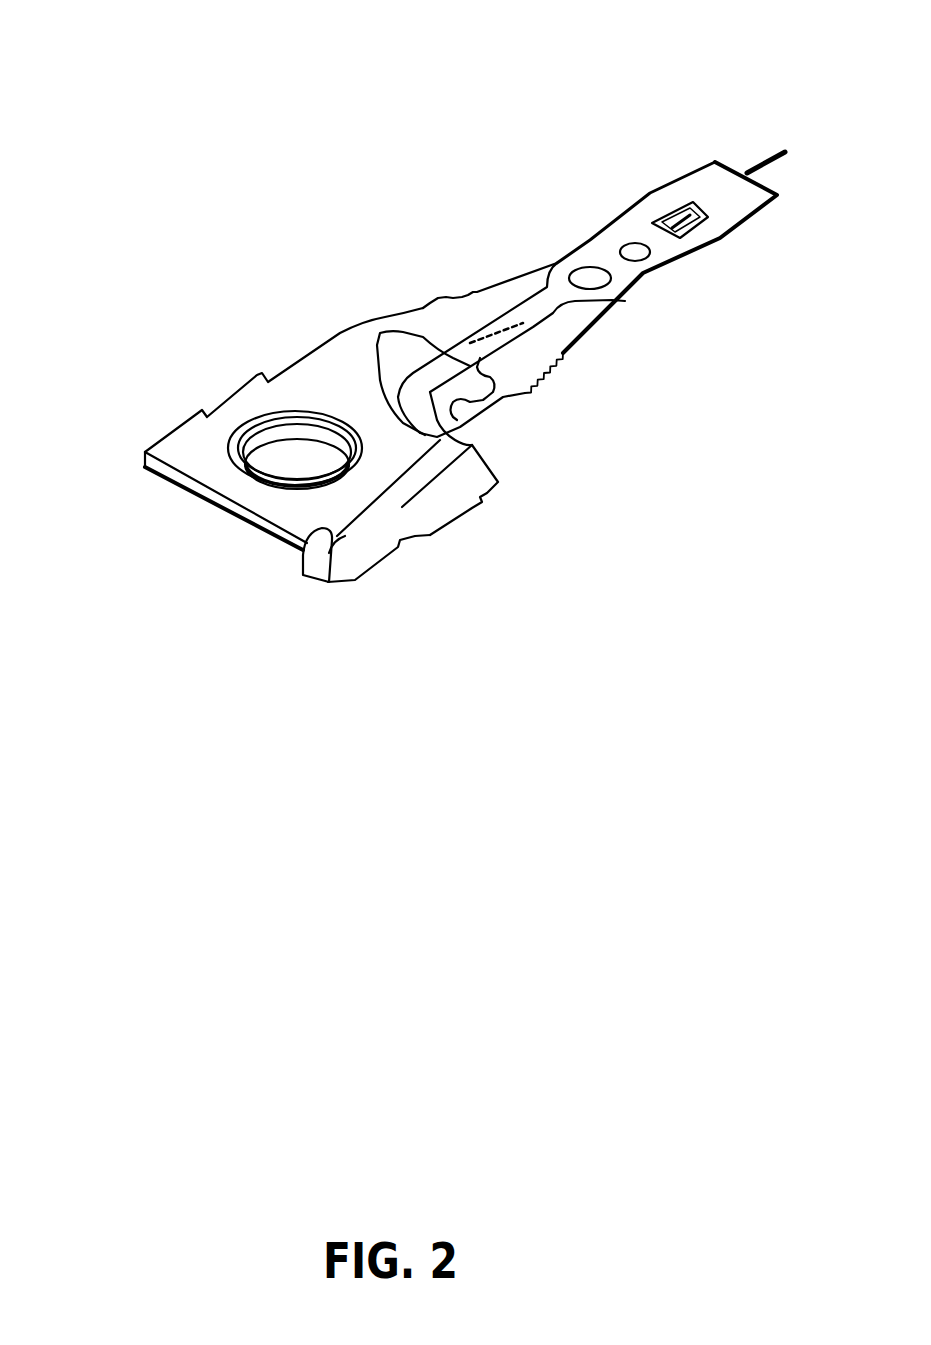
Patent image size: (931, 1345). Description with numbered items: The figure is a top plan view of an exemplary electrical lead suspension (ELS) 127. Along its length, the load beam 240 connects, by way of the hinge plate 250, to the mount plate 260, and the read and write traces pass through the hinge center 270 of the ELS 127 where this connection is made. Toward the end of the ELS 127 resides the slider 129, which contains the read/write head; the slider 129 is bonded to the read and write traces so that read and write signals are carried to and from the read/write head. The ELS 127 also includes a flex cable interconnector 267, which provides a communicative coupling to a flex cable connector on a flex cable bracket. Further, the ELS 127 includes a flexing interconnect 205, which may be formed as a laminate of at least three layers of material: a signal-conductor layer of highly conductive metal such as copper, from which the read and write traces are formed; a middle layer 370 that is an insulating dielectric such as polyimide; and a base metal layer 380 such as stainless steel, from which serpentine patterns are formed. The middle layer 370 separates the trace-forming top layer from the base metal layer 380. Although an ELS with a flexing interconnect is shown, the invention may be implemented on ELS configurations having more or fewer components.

The electrical lead suspension 127 is at (815, 47).
The load beam 240 is at (503, 290).
The hinge plate 250 is at (353, 350).
The mount plate 260 is at (290, 432).
The base metal layer 380 is at (405, 535).
The middle layer 370 is at (320, 560).
The flex cable interconnector 267 is at (473, 513).
The flexing interconnect 205 is at (420, 398).
The hinge center 270 is at (477, 388).
The slider 129 is at (708, 198).